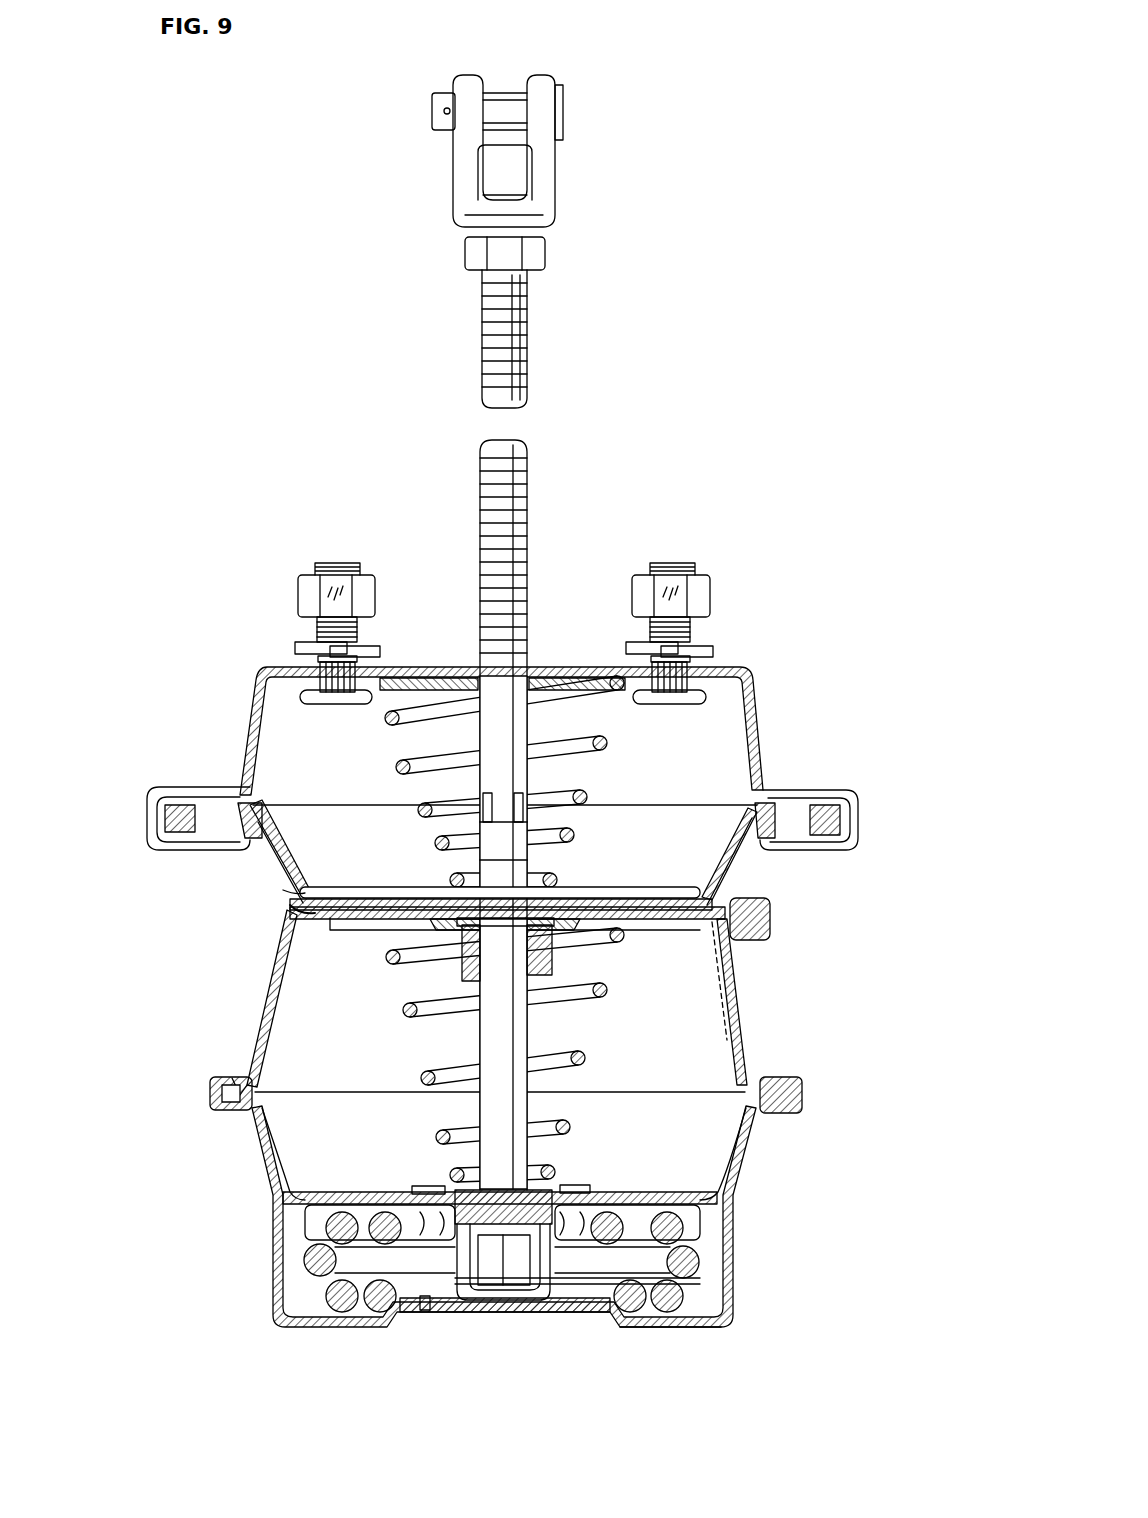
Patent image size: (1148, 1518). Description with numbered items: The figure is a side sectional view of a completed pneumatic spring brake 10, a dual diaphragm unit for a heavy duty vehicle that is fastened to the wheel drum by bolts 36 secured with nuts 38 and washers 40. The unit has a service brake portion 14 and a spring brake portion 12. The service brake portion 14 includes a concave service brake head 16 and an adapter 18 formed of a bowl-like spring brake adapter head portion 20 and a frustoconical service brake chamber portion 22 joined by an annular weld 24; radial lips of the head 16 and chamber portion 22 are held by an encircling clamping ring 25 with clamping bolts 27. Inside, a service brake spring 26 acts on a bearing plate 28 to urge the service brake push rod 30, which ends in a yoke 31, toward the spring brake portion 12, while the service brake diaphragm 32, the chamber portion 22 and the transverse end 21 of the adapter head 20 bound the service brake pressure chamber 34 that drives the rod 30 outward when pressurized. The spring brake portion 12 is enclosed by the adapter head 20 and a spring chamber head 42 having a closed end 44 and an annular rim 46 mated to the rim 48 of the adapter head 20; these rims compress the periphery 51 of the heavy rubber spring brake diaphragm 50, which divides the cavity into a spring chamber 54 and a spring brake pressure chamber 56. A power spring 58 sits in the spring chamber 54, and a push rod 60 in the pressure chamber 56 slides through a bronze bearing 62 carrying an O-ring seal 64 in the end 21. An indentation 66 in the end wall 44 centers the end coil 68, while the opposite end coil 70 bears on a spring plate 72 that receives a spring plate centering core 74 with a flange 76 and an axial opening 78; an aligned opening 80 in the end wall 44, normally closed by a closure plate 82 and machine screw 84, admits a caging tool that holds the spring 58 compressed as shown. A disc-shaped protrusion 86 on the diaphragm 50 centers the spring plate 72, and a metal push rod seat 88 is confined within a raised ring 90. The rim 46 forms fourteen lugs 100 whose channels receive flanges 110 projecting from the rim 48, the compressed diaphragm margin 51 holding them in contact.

The pneumatic spring brake 10 is at (511, 913).
The spring brake portion 12 is at (512, 1227).
The service brake portion 14 is at (511, 719).
The service brake head 16 is at (752, 718).
The adapter 18 is at (530, 1039).
The spring brake adapter head portion 20 is at (742, 975).
The transverse end 21 is at (352, 930).
The service brake chamber portion 22 is at (263, 860).
The annular weld 24 is at (286, 906).
The clamping ring 25 is at (782, 797).
The service brake spring 26 is at (585, 760).
The clamping bolts 27 is at (168, 818).
The bearing plate 28 is at (620, 888).
The service brake push rod 30 is at (484, 733).
The yoke 31 is at (545, 195).
The service brake diaphragm 32 is at (290, 862).
The service brake pressure chamber 34 is at (284, 893).
The bolts 36 is at (315, 628).
The nuts 38 is at (298, 590).
The washers 40 is at (292, 648).
The spring chamber head 42 is at (740, 1305).
The transverse closed end 44 is at (700, 1325).
The annular rim 46 is at (250, 1120).
The annular rim 48 is at (242, 1075).
The spring brake diaphragm 50 is at (700, 1190).
The periphery 51 is at (215, 1100).
The spring chamber 54 is at (705, 1250).
The spring brake pressure chamber 56 is at (715, 1070).
The power spring 58 is at (318, 1298).
The push rod 60 is at (485, 1040).
The annular bearing 62 is at (545, 955).
The O-ring seal 64 is at (460, 952).
The indentation 66 is at (610, 1312).
The end coil 68 is at (362, 1318).
The end coil 70 is at (375, 1222).
The spring plate 72 is at (300, 1222).
The spring plate centering core 74 is at (478, 1300).
The flange 76 is at (445, 1205).
The central axial opening 78 is at (545, 1285).
The central axial opening 80 is at (515, 1310).
The closure plate 82 is at (500, 1312).
The machine screw 84 is at (425, 1315).
The protrusion 86 is at (545, 1190).
The push rod seat 88 is at (420, 1195).
The raised ring 90 is at (575, 1195).
The lugs 100 is at (212, 1092).
The flanges 110 is at (772, 1075).